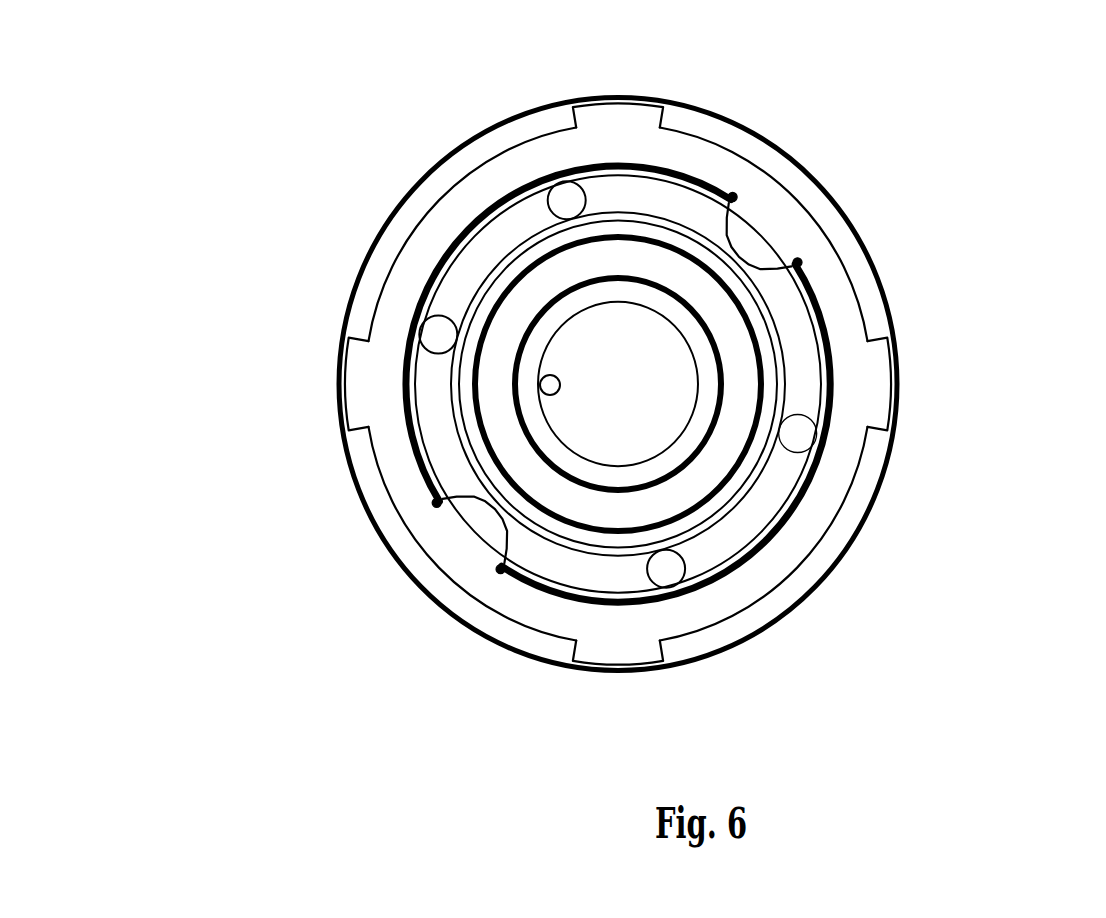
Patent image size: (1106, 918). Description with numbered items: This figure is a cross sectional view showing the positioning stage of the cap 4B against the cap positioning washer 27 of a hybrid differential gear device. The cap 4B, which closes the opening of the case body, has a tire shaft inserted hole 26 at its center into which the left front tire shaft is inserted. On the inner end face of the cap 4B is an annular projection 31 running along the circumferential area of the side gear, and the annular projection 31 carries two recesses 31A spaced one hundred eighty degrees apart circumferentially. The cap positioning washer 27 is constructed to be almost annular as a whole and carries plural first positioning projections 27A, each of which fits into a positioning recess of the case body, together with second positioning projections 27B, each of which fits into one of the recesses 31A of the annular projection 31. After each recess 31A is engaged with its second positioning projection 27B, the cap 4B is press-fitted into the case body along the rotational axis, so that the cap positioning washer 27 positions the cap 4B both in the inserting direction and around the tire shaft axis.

The cap 4B is at (510, 93).
The cap positioning washer 27 is at (751, 595).
The first positioning projection 27A is at (636, 105).
The second positioning projection 27B is at (474, 542).
The annular projection 31 is at (437, 260).
The recess 31A is at (745, 214).
The tire shaft inserted hole 26 is at (556, 395).